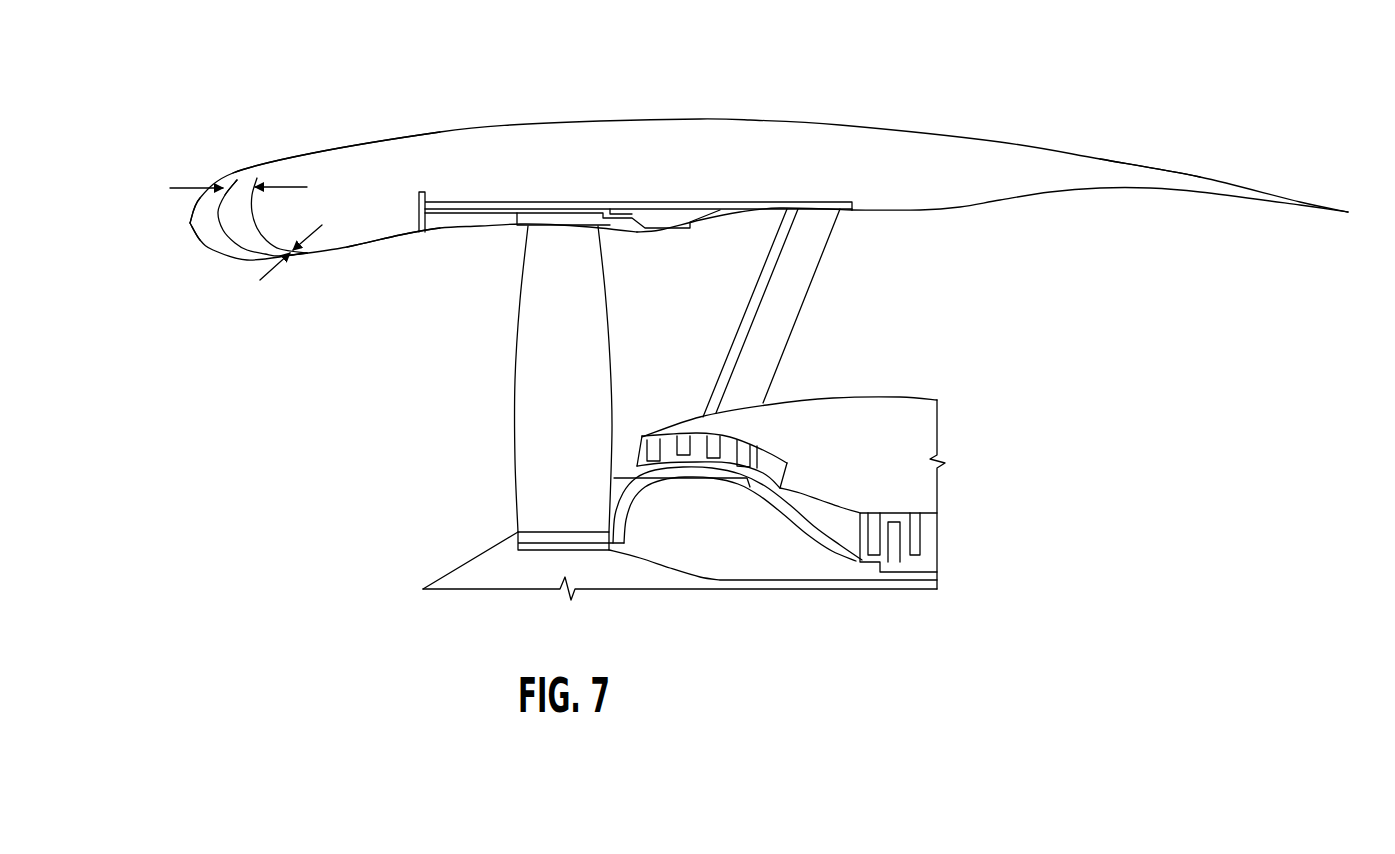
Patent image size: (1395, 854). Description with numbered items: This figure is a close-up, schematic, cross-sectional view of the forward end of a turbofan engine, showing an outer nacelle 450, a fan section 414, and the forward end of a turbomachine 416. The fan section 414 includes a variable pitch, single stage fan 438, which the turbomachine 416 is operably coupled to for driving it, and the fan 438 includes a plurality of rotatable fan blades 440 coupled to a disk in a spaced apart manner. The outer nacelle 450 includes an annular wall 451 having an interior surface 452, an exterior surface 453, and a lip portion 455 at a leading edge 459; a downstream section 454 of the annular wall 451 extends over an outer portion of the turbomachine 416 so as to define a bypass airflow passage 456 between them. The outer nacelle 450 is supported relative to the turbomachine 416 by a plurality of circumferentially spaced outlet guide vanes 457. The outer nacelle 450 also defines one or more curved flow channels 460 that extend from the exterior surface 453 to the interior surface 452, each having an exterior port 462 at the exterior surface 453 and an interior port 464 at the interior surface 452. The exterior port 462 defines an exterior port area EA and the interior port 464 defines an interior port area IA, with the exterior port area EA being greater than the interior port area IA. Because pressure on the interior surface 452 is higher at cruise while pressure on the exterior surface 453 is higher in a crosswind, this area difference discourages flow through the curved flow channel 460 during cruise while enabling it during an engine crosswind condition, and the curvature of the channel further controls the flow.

The fan section 414 is at (550, 388).
The turbomachine 416 is at (687, 400).
The fan 438 is at (575, 208).
The fan blades 440 is at (600, 283).
The outer nacelle 450 is at (769, 143).
The annular wall 451 is at (705, 142).
The interior surface 452 is at (367, 242).
The exterior surface 453 is at (313, 153).
The downstream section 454 is at (1130, 168).
The lip portion 455 is at (227, 247).
The bypass airflow passage 456 is at (903, 323).
The outlet guide vanes 457 is at (820, 248).
The leading edge 459 is at (190, 223).
The curved flow channels 460 is at (250, 213).
The exterior port 462 is at (237, 180).
The interior port 464 is at (293, 253).
The exterior port area EA is at (238, 205).
The interior port area IA is at (291, 272).